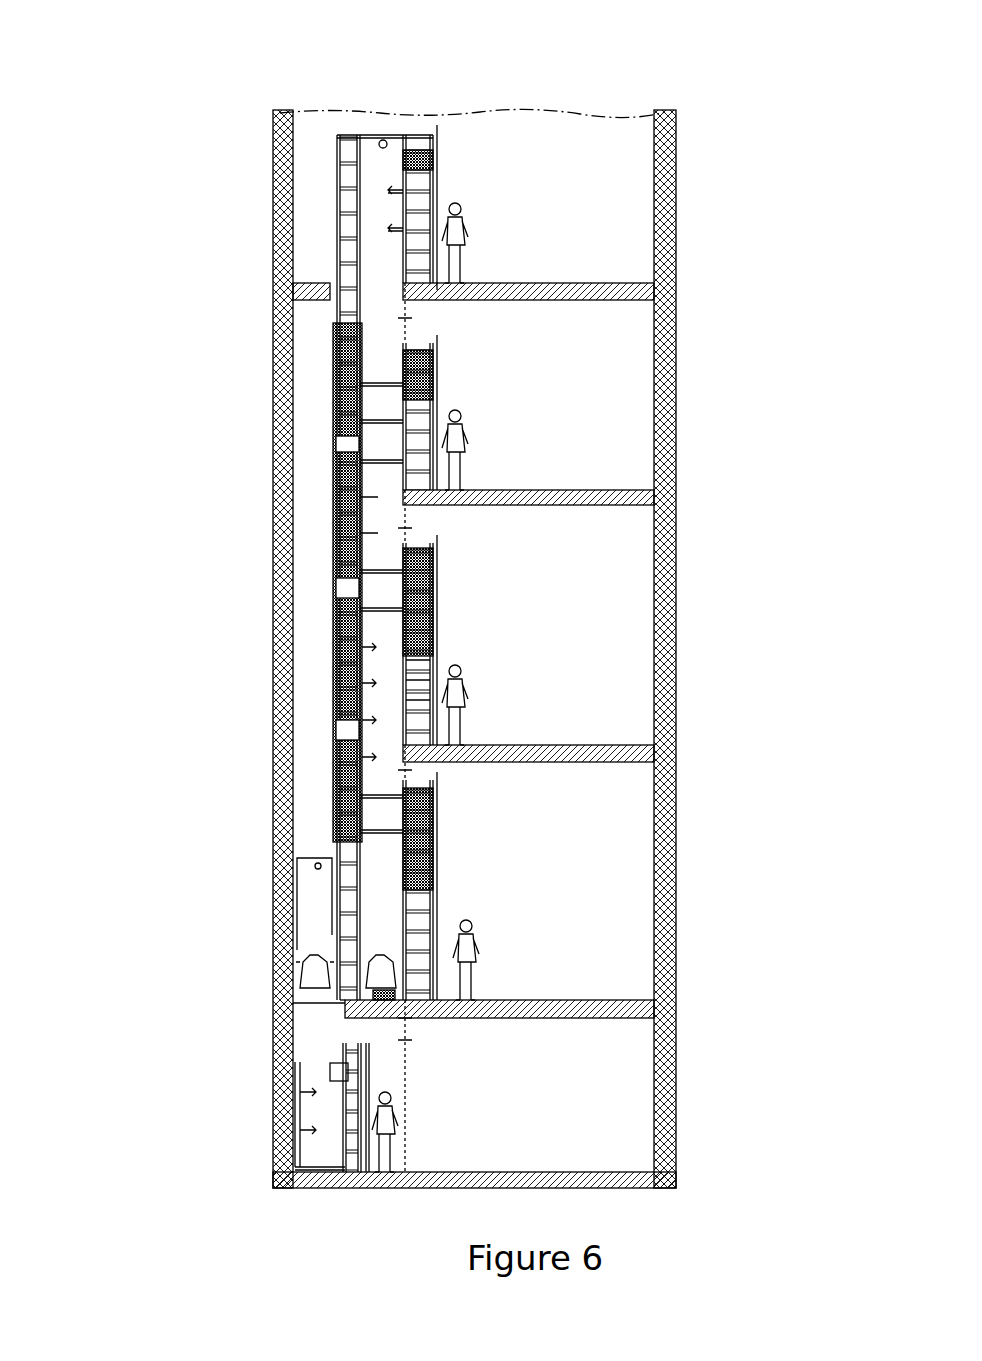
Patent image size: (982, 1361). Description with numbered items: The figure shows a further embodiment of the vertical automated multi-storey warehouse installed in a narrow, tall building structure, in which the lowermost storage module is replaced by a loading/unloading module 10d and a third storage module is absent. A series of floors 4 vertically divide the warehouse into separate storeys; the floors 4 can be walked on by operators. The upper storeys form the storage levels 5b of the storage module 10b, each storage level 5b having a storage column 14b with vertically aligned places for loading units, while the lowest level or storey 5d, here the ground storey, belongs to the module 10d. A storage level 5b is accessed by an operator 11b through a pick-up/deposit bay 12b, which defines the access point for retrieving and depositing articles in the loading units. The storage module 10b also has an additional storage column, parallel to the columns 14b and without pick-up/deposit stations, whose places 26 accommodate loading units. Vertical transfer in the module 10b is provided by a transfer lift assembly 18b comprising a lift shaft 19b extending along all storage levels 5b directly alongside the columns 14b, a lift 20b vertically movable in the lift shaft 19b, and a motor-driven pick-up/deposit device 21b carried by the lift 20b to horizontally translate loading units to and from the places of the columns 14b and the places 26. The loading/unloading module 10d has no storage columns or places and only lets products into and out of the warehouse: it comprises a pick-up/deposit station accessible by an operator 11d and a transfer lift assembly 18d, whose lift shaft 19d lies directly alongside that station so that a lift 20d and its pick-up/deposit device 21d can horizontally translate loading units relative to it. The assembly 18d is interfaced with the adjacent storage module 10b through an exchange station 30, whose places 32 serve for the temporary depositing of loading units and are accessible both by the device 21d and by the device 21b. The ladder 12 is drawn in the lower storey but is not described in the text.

The floors 4 is at (608, 770).
The storage levels 5b is at (565, 222).
The level or storey 5d is at (598, 1067).
The storage module 10b is at (235, 612).
The loading/unloading module 10d is at (498, 1094).
The operator 11b is at (475, 952).
The operator 11d is at (396, 1120).
The ladder 12 is at (348, 1103).
The pick-up/deposit bay 12b is at (418, 695).
The storage columns 14b is at (437, 362).
The transfer lift assembly 18b is at (410, 1033).
The transfer lift assembly 18d is at (300, 1003).
The lift shaft 19b is at (372, 172).
The lift shaft 19d is at (322, 1100).
The lift 20b is at (377, 950).
The lift 20d is at (300, 980).
The pick-up/deposit device 21b is at (398, 955).
The pick-up/deposit device 21d is at (316, 960).
The places 26 is at (337, 240).
The exchange station 30 is at (326, 946).
The places 32 is at (345, 985).